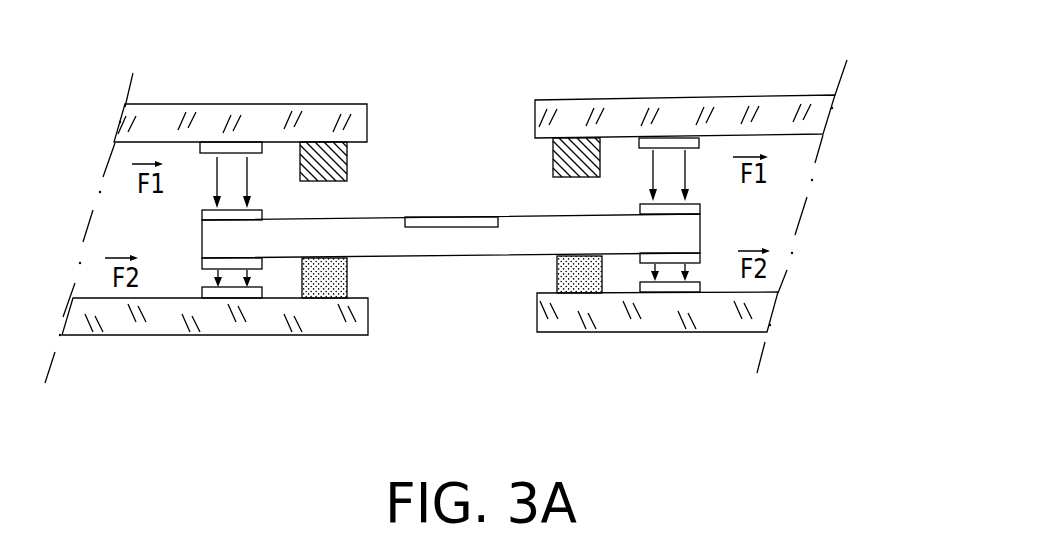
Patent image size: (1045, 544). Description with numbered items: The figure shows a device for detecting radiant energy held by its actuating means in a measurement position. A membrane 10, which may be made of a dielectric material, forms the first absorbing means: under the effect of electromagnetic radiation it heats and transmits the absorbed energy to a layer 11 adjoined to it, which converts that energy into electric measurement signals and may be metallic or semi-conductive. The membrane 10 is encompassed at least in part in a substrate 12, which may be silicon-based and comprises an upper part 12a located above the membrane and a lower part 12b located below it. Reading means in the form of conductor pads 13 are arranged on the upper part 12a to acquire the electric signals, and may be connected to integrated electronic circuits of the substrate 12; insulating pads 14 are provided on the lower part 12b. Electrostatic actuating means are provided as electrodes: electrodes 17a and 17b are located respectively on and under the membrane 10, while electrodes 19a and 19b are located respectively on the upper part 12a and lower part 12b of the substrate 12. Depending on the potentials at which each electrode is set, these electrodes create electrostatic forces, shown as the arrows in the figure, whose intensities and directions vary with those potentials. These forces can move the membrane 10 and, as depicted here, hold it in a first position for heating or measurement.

The membrane 10 is at (395, 248).
The layer 11 is at (461, 221).
The substrate 12 is at (498, 215).
The upper part of the substrate 12a is at (818, 115).
The lower part of the substrate 12b is at (463, 285).
The conductor pads 13 is at (326, 152).
The insulating pads 14 is at (325, 284).
The electrode on the membrane 17a is at (208, 214).
The electrode under the membrane 17b is at (206, 263).
The electrode on the upper part of the substrate 19a is at (236, 147).
The electrode on the lower part of the substrate 19b is at (247, 292).